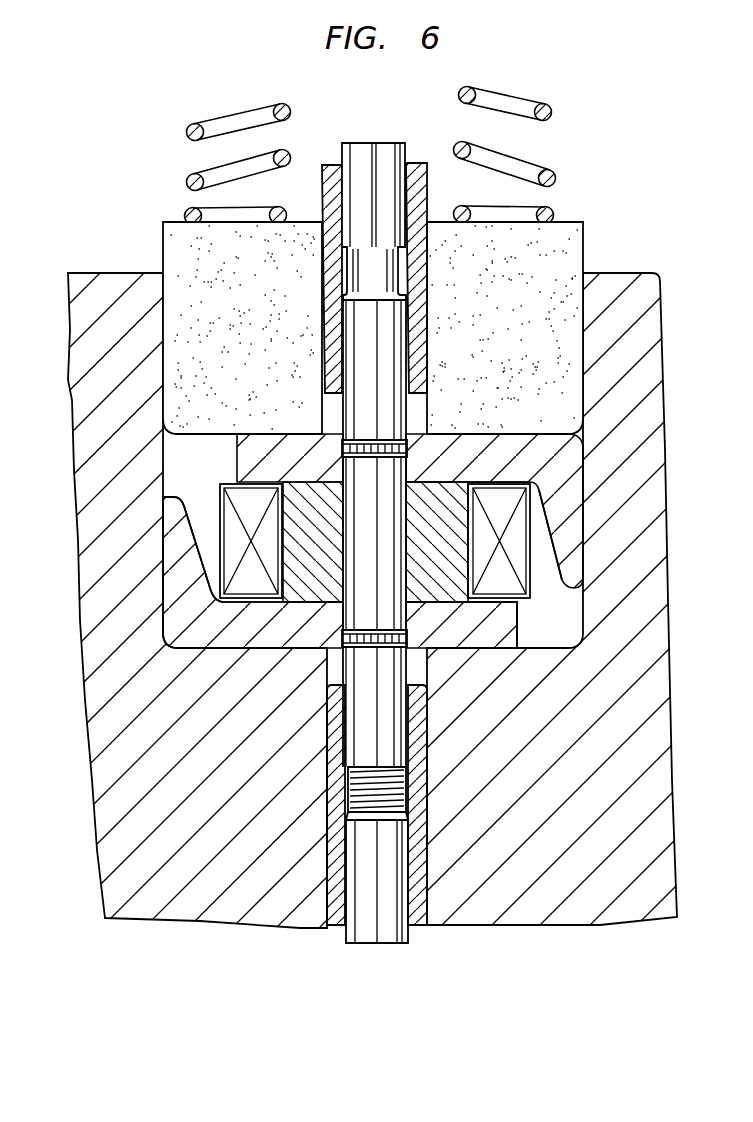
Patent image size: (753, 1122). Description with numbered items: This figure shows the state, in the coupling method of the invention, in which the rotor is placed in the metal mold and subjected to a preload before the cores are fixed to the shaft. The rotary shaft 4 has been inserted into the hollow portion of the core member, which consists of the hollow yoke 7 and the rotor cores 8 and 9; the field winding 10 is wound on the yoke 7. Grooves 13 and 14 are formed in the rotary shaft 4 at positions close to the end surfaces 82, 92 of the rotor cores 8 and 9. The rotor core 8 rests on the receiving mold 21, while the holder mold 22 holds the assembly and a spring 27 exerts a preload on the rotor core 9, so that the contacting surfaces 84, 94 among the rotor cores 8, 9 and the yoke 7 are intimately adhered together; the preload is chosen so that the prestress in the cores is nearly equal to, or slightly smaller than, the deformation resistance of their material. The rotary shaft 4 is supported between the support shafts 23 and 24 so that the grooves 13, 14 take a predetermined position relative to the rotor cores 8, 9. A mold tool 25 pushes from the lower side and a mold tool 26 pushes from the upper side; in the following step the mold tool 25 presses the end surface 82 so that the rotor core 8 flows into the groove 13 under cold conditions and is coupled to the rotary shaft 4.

The rotary shaft 4 is at (397, 741).
The hollow yoke 7 is at (298, 498).
The rotor core 8 is at (196, 633).
The rotor core 9 is at (567, 550).
The field winding 10 is at (226, 526).
The groove 13 is at (393, 652).
The groove 14 is at (398, 435).
The receiving mold 21 is at (555, 915).
The holder mold 22 is at (572, 240).
The support shaft 23 is at (377, 935).
The support shaft 24 is at (385, 152).
The mold tool 25 is at (418, 922).
The mold tool 26 is at (420, 192).
The spring 27 is at (547, 170).
The end surface 82 is at (484, 648).
The contacting surface 84 is at (296, 612).
The end surface 92 is at (527, 433).
The contacting surface 94 is at (460, 480).